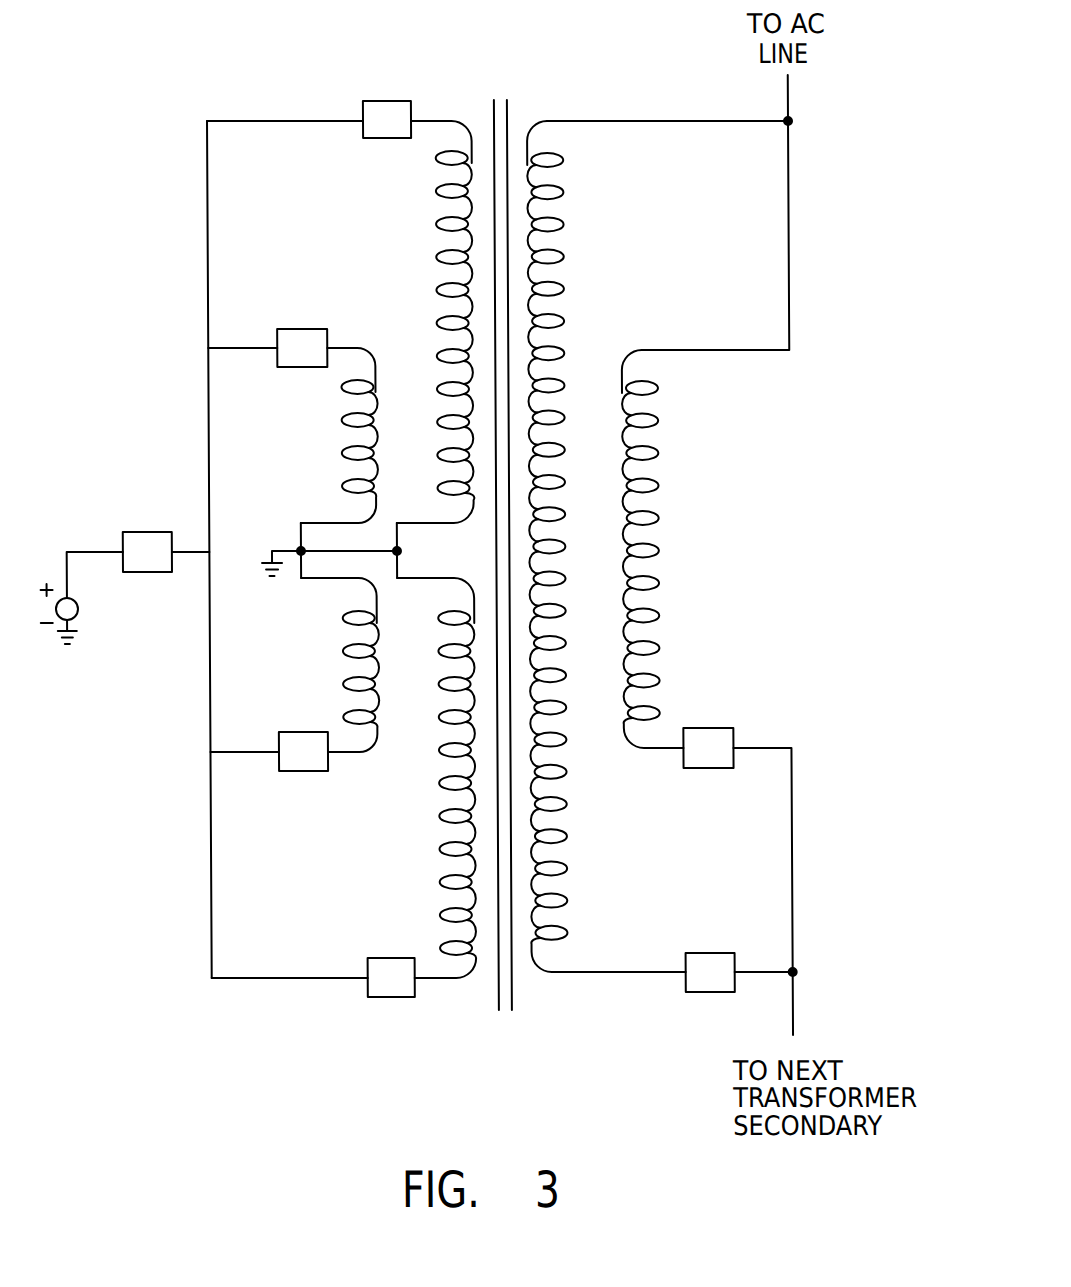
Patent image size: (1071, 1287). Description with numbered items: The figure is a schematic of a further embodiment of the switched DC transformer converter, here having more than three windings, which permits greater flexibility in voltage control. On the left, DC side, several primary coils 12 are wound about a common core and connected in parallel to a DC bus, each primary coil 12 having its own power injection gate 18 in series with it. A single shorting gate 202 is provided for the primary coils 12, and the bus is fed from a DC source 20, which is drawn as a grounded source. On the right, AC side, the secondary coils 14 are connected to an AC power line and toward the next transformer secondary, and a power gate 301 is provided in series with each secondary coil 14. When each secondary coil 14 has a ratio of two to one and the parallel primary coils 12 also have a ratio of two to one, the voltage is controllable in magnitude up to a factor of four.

The primary coil 12 is at (373, 743).
The secondary coil 14 is at (564, 317).
The power injection gate 18 is at (383, 140).
The DC source 20 is at (77, 653).
The shorting gate 202 is at (143, 530).
The power gate 301 is at (704, 728).